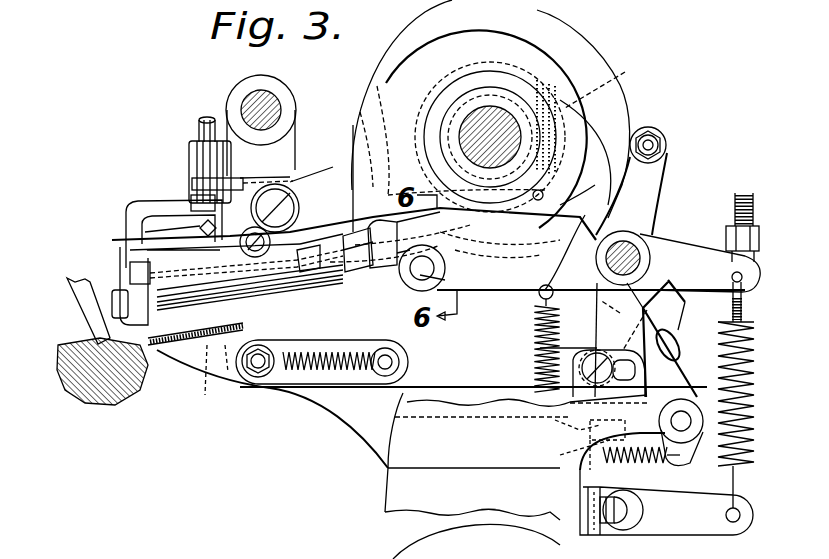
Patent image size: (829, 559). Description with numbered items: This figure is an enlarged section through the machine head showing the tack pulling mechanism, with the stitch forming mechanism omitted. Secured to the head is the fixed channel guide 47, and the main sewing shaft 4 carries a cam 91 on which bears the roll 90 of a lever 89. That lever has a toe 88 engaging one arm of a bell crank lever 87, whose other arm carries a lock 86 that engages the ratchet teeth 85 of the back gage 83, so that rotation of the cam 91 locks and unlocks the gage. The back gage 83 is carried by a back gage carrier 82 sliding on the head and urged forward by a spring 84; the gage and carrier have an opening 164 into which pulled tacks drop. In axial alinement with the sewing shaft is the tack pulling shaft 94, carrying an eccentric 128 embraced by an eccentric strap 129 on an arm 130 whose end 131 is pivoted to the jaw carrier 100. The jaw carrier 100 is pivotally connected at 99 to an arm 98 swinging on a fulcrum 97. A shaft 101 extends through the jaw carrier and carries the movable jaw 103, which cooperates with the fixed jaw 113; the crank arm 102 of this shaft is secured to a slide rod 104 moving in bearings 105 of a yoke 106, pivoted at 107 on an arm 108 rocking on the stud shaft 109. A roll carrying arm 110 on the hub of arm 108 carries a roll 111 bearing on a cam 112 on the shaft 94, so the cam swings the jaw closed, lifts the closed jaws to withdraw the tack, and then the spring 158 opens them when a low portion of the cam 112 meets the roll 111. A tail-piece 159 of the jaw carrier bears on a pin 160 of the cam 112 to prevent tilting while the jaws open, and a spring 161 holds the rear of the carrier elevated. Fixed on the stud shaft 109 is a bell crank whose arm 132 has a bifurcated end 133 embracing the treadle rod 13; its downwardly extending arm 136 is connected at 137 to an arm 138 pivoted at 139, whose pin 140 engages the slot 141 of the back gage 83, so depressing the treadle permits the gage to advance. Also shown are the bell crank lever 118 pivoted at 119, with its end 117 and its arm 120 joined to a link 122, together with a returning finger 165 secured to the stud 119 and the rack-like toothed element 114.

The main sewing shaft 4 is at (553, 140).
The treadle rod 13 is at (774, 221).
The channel guide 47 is at (100, 332).
The back gage carrier 82 is at (505, 395).
The back gage 83 is at (163, 360).
The spring 84 is at (323, 383).
The ratchet teeth 85 is at (572, 420).
The lock 86 is at (580, 455).
The bell crank lever 87 is at (740, 405).
The toe 88 is at (622, 338).
The lever 89 is at (662, 167).
The roll 90 is at (668, 144).
The cam 91 is at (598, 35).
The tack pulling shaft 94 is at (508, 130).
The fulcrum 97 is at (262, 100).
The arm 98 is at (290, 147).
The pivotal connection 99 is at (305, 290).
The jaw carrier 100 is at (322, 285).
The jaw carrying shaft 101 is at (237, 296).
The crank arm 102 is at (388, 285).
The movable jaw 103 is at (127, 282).
The slide rod 104 is at (324, 268).
The bearings 105 is at (353, 132).
The yoke 106 is at (365, 290).
The pivot 107 is at (422, 268).
The arm 108 is at (530, 280).
The stud shaft 109 is at (638, 236).
The roll carrying arm 110 is at (658, 186).
The roll 111 is at (562, 200).
The cam 112 is at (630, 122).
The fixed jaw 113 is at (140, 310).
The rack 114 is at (195, 331).
The end 117 is at (165, 236).
The bell crank lever 118 is at (178, 200).
The pivot 119 is at (200, 120).
The arm 120 is at (185, 185).
The link 122 is at (222, 188).
The eccentric 128 is at (443, 117).
The eccentric strap 129 is at (445, 96).
The arm 130 is at (360, 112).
The end 131 is at (560, 95).
The arm 132 is at (717, 222).
The bifurcated end 133 is at (763, 294).
The arm 136 is at (620, 313).
The connection 137 is at (703, 436).
The arm 138 is at (628, 480).
The pivot 139 is at (623, 517).
The pin 140 is at (727, 381).
The slot 141 is at (632, 358).
The spring 158 is at (755, 342).
The tail-piece 159 is at (378, 88).
The pin 160 is at (625, 72).
The spring 161 is at (575, 137).
The opening 164 is at (205, 393).
The returning finger 165 is at (167, 232).